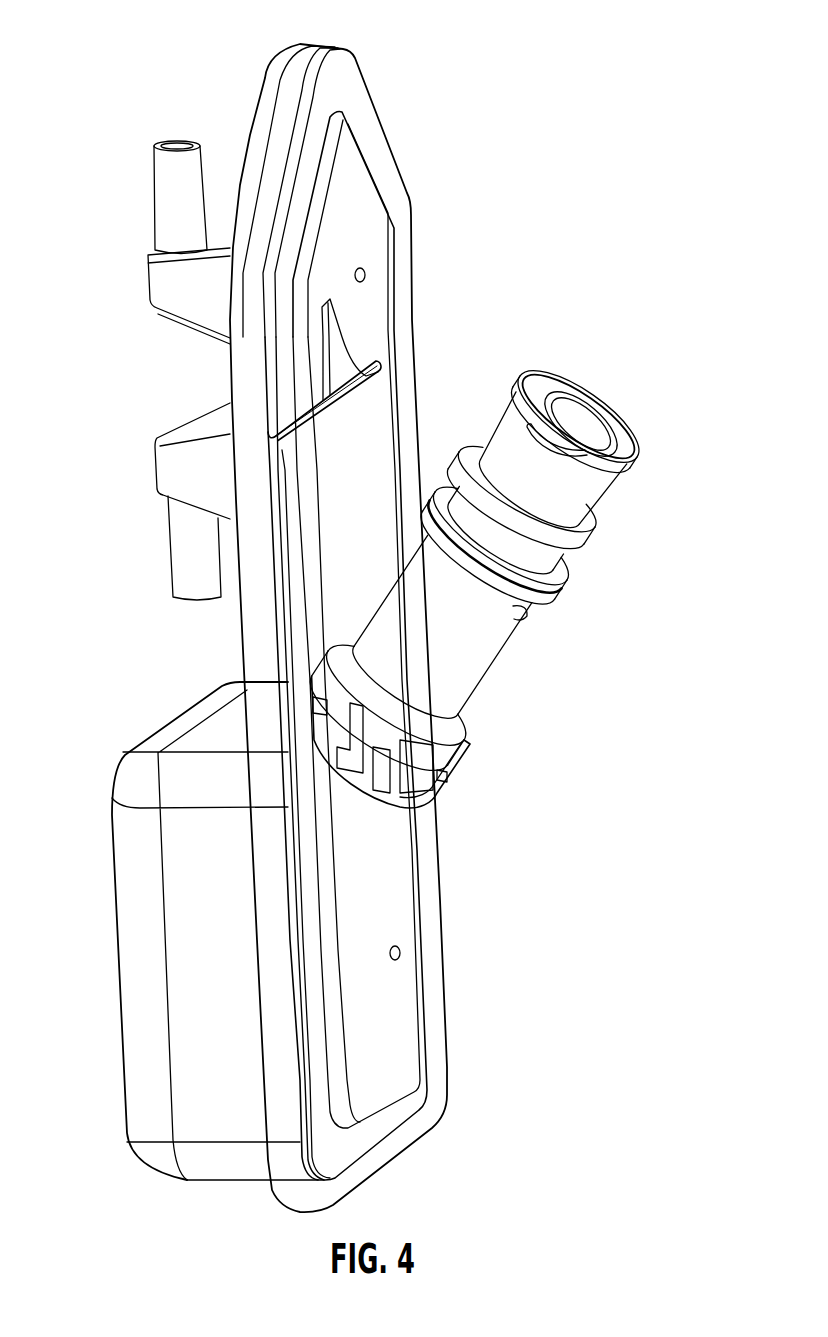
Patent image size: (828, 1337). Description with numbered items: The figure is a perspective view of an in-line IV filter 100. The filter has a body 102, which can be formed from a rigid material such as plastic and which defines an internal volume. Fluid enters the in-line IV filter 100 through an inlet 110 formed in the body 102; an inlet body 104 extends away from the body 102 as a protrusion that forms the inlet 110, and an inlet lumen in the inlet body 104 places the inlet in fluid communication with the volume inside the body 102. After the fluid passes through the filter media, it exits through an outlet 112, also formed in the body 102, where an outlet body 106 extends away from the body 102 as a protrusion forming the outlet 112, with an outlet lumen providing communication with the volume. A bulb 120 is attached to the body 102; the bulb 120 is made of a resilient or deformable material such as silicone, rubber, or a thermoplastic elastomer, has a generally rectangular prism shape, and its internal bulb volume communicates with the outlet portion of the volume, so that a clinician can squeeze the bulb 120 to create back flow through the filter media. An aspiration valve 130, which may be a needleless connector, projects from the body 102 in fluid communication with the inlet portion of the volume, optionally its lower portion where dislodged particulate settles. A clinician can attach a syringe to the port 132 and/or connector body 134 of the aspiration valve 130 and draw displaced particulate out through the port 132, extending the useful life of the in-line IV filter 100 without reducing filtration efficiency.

The in-line IV filter 100 is at (487, 56).
The body 102 is at (378, 153).
The inlet body 104 is at (158, 280).
The outlet body 106 is at (208, 422).
The inlet 110 is at (178, 163).
The outlet 112 is at (180, 547).
The bulb 120 is at (187, 926).
The aspiration valve 130 is at (528, 622).
The port 132 is at (582, 420).
The connector body 134 is at (614, 468).